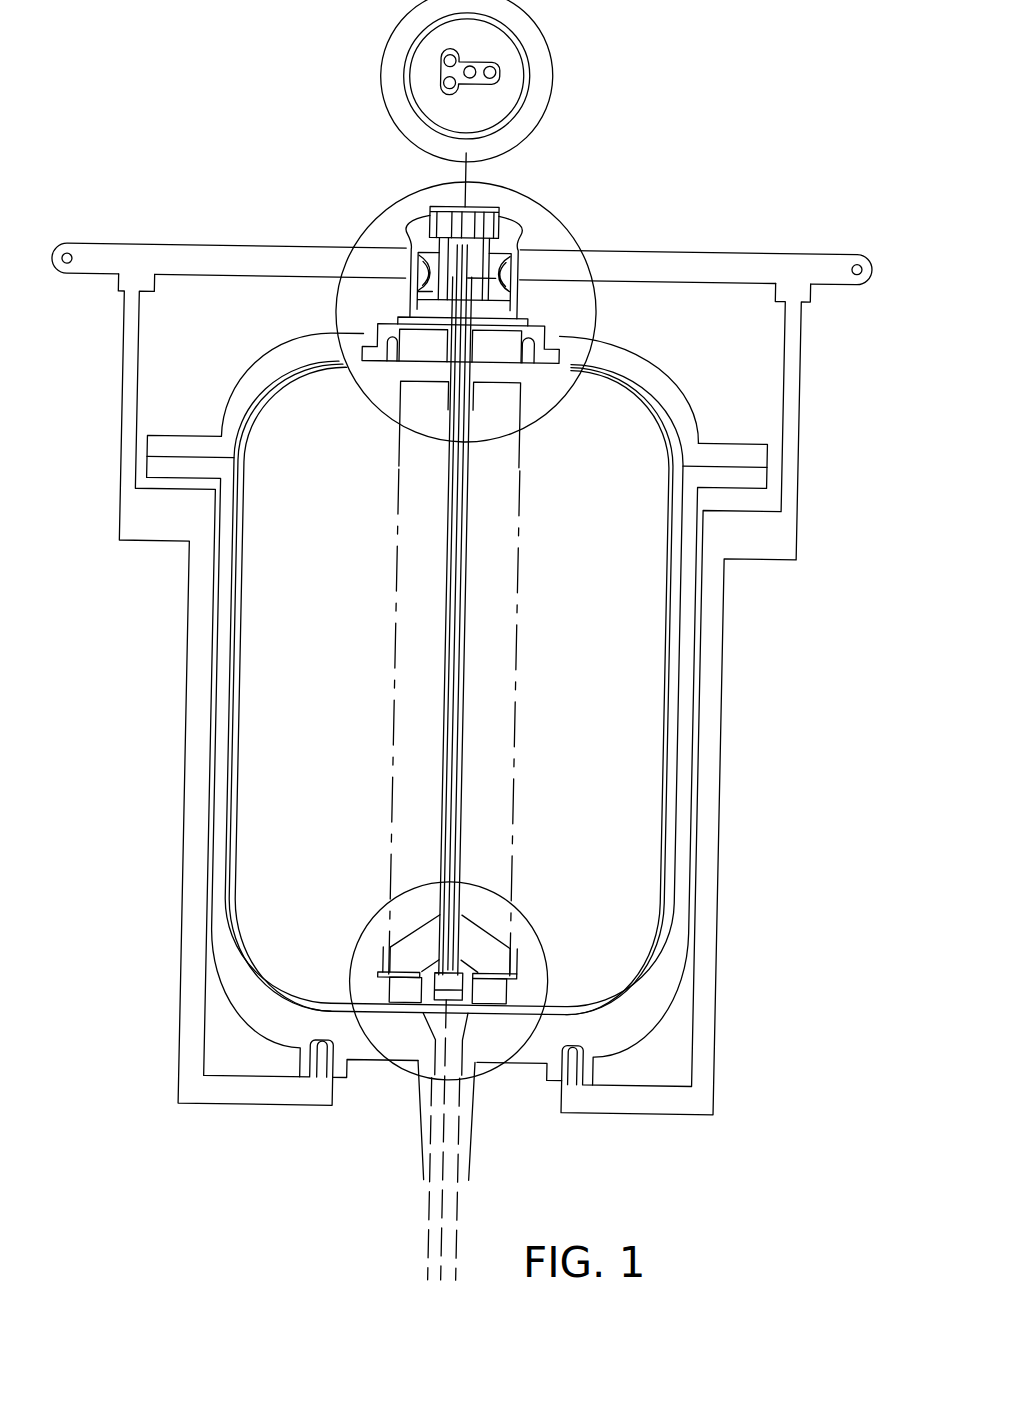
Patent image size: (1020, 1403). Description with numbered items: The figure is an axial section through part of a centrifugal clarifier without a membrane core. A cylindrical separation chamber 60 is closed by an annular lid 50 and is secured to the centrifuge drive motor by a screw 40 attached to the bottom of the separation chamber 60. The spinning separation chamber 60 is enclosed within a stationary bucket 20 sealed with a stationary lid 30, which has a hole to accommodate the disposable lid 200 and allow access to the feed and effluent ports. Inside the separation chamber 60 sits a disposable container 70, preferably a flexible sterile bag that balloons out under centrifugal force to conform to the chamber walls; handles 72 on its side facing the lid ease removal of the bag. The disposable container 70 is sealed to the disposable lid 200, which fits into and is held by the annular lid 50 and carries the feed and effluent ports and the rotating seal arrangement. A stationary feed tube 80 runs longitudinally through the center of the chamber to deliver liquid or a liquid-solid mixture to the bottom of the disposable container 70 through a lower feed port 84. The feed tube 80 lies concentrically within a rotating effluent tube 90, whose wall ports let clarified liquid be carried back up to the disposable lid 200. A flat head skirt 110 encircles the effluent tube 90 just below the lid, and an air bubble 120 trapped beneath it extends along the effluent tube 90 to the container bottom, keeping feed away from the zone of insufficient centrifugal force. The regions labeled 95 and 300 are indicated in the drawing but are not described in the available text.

The stationary bucket 20 is at (122, 390).
The stationary lid 30 is at (666, 247).
The screw 40 is at (468, 1171).
The annular lid 50 is at (622, 345).
The separation chamber 60 is at (695, 535).
The disposable container 70 is at (678, 598).
The handles 72 is at (653, 402).
The feed tube 80 is at (460, 758).
The lower feed port 84 is at (483, 988).
The effluent tube 90 is at (463, 810).
The sleeve 95 is at (475, 371).
The head skirt 110 is at (393, 380).
The air bubble 120 is at (418, 748).
The disposable lid 200 is at (372, 213).
The bottom assembly 300 is at (398, 1072).